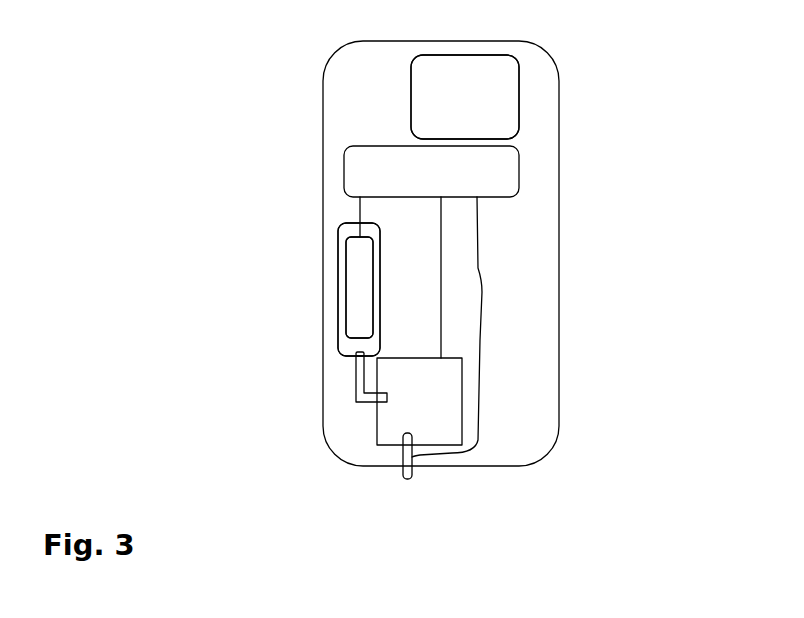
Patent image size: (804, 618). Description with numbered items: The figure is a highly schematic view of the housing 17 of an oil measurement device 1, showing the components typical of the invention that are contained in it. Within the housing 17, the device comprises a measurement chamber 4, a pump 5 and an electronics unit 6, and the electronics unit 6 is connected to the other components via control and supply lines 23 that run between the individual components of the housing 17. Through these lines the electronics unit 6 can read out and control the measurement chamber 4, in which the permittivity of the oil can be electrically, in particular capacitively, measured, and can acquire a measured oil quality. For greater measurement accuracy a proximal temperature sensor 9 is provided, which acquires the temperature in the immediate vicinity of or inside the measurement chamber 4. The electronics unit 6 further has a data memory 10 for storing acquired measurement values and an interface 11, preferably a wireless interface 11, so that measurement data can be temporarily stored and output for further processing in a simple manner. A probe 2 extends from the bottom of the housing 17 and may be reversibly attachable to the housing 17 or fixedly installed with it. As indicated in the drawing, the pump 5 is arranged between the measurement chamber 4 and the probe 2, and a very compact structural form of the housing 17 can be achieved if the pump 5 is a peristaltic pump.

The oil measurement device 1 is at (414, 249).
The probe 2 is at (398, 482).
The measurement chamber 4 is at (338, 313).
The pump 5 is at (377, 427).
The electronics unit 6 is at (519, 173).
The proximal temperature sensor 9 is at (338, 313).
The data memory 10 is at (519, 93).
The interface 11 is at (519, 93).
The housing 17 is at (559, 425).
The control and supply lines 23 is at (360, 209).